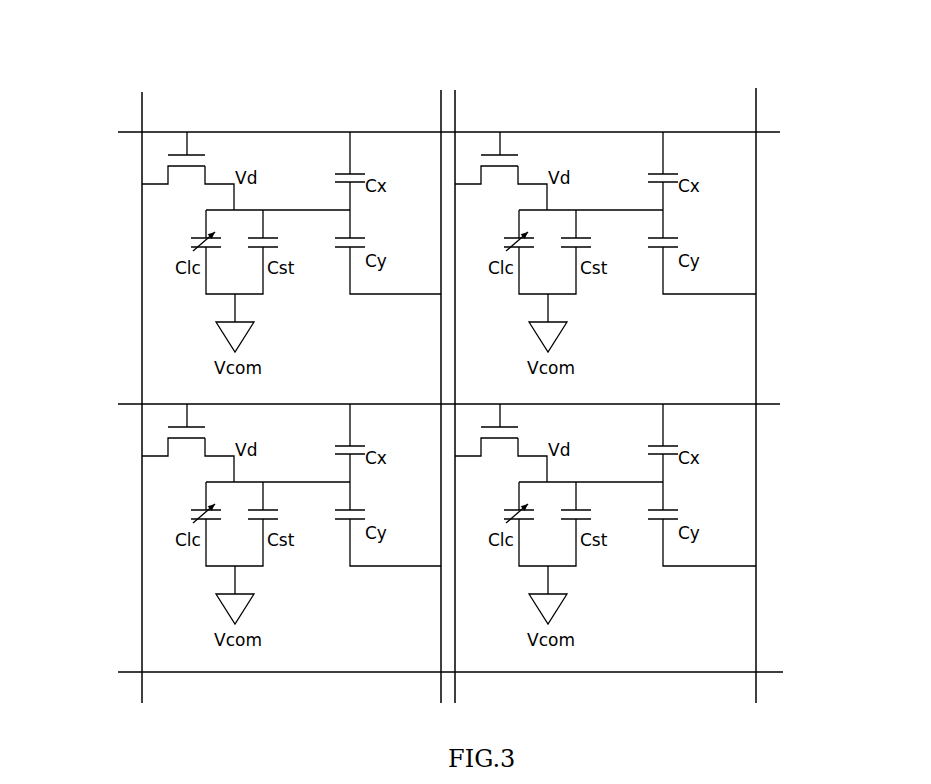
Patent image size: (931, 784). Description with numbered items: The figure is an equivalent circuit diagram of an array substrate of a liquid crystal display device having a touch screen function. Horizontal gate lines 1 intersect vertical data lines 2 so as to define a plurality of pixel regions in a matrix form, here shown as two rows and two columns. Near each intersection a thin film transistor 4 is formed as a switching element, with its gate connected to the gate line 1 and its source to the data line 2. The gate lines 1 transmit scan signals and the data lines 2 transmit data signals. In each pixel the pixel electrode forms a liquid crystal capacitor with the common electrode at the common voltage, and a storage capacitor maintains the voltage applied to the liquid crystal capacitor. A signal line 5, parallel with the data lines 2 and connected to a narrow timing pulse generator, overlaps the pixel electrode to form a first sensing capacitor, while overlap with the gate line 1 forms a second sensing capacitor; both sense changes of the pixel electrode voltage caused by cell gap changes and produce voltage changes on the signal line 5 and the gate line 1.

The gate line 1 is at (653, 132).
The data line 2 is at (142, 287).
The thin film transistor 4 is at (186, 165).
The signal line 5 is at (756, 255).